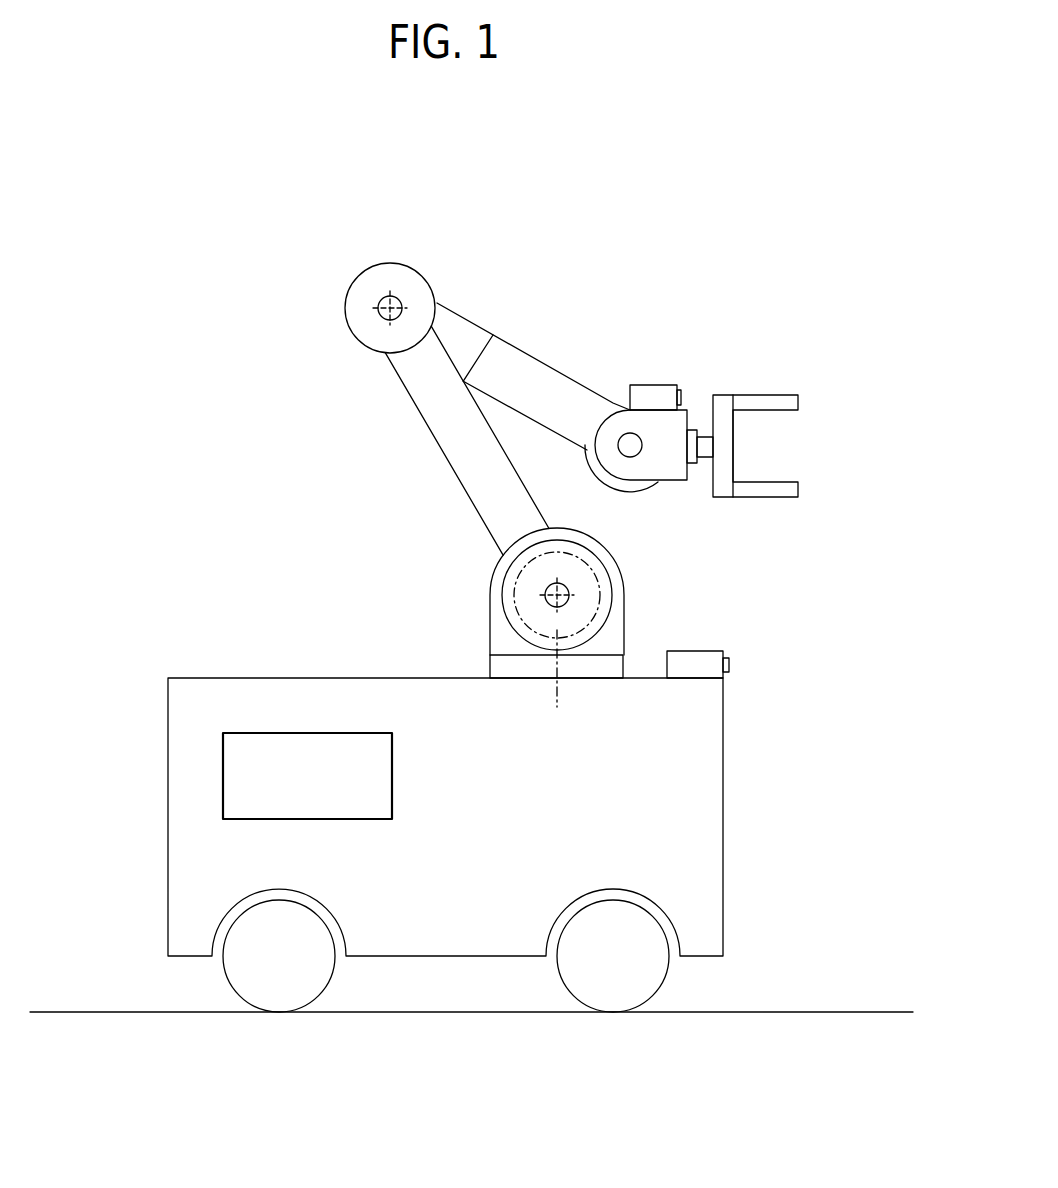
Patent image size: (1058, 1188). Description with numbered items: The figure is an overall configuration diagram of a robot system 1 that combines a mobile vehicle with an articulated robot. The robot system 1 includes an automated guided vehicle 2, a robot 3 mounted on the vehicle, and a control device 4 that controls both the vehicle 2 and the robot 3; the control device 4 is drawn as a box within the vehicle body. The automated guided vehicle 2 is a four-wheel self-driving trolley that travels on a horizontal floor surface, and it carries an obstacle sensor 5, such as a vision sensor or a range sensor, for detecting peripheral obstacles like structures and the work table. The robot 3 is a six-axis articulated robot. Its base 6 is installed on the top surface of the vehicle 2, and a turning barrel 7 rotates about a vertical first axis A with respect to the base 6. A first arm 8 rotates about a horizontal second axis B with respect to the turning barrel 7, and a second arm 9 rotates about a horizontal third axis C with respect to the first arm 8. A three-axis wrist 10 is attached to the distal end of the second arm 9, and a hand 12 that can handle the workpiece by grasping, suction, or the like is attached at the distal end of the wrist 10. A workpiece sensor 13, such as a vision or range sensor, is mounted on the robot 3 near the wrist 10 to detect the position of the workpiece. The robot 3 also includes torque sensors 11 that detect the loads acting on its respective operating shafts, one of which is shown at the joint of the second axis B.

The robot system 1 is at (187, 190).
The automated guided vehicle 2 is at (168, 742).
The robot 3 is at (350, 285).
The control device 4 is at (290, 733).
The obstacle sensor 5 is at (694, 651).
The base 6 is at (490, 667).
The turning barrel 7 is at (490, 613).
The first arm 8 is at (427, 433).
The second arm 9 is at (451, 303).
The wrist 10 is at (690, 417).
The torque sensor 11 is at (601, 583).
The hand 12 is at (757, 395).
The workpiece sensor 13 is at (650, 385).
The first axis A is at (558, 690).
The second axis B is at (566, 587).
The third axis C is at (389, 296).